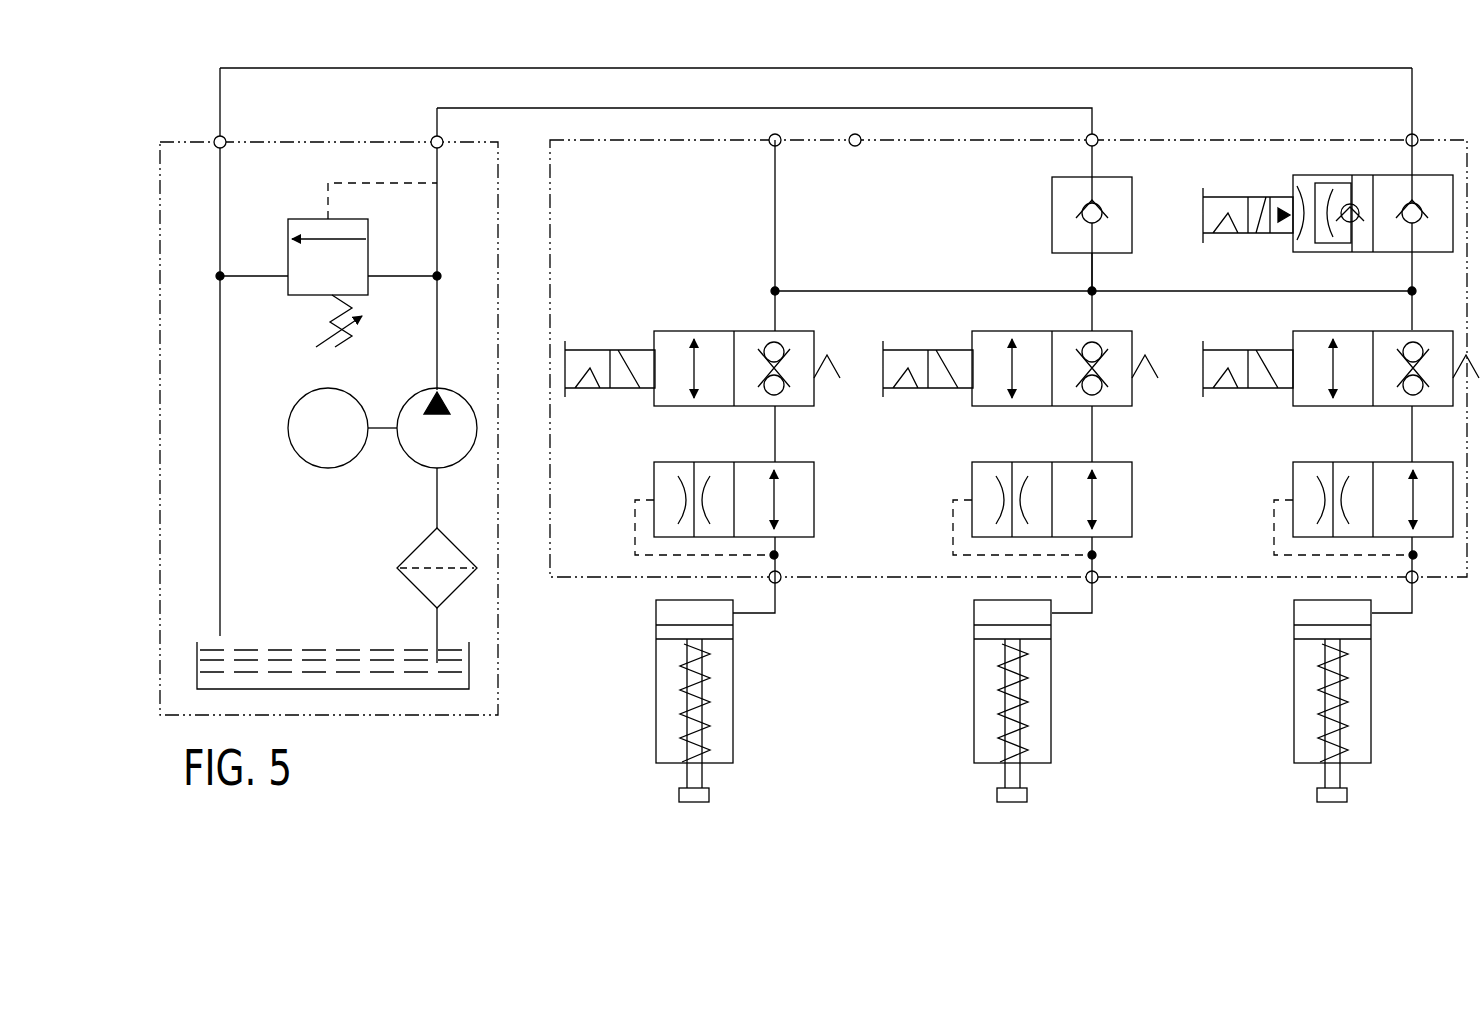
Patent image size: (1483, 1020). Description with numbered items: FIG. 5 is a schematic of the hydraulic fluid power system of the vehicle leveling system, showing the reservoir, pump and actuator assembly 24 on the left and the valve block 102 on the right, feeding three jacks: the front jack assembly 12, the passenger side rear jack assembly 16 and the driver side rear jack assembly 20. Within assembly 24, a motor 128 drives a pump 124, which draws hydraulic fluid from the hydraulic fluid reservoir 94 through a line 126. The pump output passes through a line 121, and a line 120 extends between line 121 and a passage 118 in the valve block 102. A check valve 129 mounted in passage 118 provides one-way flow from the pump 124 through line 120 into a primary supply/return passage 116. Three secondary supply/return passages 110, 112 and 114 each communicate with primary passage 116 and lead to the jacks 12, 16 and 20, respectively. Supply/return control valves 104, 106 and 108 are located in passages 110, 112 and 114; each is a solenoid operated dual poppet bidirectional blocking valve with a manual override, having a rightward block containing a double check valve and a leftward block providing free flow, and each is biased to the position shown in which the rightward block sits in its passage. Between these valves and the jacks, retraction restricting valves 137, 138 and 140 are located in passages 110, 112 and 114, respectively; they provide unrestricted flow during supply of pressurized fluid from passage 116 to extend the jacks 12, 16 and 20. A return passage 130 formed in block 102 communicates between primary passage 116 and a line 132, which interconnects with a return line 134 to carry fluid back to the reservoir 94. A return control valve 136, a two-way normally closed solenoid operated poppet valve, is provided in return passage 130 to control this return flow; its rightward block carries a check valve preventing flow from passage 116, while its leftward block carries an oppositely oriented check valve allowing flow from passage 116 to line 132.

The front jack assembly 12 is at (628, 716).
The passenger side rear jack assembly 16 is at (955, 716).
The driver side rear jack assembly 20 is at (1280, 716).
The reservoir, pump and actuator assembly 24 is at (330, 136).
The hydraulic fluid reservoir 94 is at (469, 672).
The valve block 102 is at (1148, 140).
The supply/return control valve 104 is at (713, 317).
The supply/return control valve 106 is at (1032, 324).
The supply/return control valve 108 is at (1344, 324).
The secondary supply/return passage 110 is at (777, 437).
The secondary supply/return passage 112 is at (1094, 437).
The secondary supply/return passage 114 is at (1410, 436).
The primary supply/return passage 116 is at (1007, 291).
The passage 118 is at (1096, 278).
The line 120 is at (592, 108).
The line 121 is at (440, 312).
The pump 124 is at (452, 392).
The line 126 is at (437, 497).
The motor 128 is at (328, 468).
The check valve 129 is at (1052, 215).
The return passage 130 is at (1410, 268).
The line 132 is at (997, 68).
The return line 134 is at (222, 343).
The return control valve 136 is at (1271, 248).
The retraction restricting valve 137 is at (834, 462).
The retraction restricting valve 138 is at (1150, 462).
The retraction restricting valve 140 is at (1286, 446).